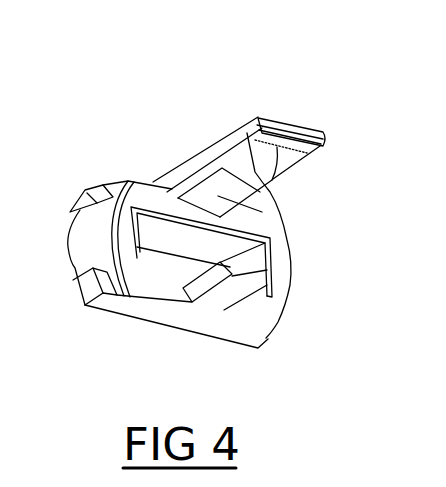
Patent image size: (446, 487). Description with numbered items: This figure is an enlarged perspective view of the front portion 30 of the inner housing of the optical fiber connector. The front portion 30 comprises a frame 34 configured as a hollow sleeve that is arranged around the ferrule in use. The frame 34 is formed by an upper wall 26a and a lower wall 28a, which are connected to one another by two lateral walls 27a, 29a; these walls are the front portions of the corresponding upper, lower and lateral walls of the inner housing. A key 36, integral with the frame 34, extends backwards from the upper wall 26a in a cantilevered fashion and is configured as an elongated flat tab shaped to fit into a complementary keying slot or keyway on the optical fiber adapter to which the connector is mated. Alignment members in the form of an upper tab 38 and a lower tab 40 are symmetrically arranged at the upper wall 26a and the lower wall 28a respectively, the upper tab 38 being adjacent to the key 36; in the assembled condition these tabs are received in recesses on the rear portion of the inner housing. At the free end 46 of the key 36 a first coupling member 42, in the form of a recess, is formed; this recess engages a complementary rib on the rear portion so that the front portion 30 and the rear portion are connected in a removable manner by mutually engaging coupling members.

The front portion 30 is at (112, 97).
The upper wall 26a is at (143, 183).
The lateral wall 29a is at (88, 252).
The lower wall 28a is at (160, 311).
The key 36 is at (230, 140).
The upper tab 38 is at (220, 198).
The free end 46 is at (300, 108).
The first coupling member 42 is at (272, 184).
The lower tab 40 is at (268, 277).
The frame 34 is at (281, 314).
The lateral wall 27a is at (270, 313).